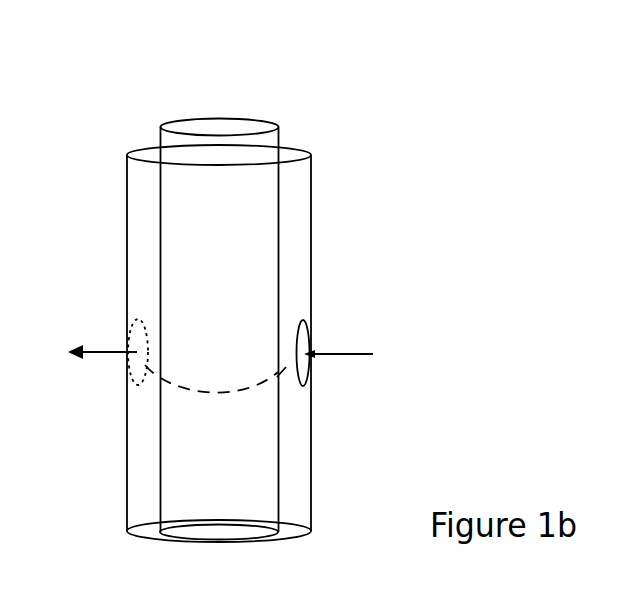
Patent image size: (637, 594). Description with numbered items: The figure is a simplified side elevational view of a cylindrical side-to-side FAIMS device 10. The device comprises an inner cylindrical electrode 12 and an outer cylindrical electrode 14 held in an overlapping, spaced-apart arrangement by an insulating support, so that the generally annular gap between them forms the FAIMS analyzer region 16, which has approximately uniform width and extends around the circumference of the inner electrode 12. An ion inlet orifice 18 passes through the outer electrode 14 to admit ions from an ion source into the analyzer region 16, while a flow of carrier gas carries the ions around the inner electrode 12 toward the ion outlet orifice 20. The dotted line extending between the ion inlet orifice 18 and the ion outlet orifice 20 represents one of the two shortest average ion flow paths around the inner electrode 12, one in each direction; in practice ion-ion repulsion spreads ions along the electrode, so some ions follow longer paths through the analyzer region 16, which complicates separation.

The cylindrical side-to-side FAIMS device 10 is at (86, 85).
The inner cylindrical electrode 12 is at (232, 117).
The outer cylindrical electrode 14 is at (307, 410).
The FAIMS analyzer region 16 is at (291, 153).
The ion inlet orifice 18 is at (305, 321).
The ion outlet orifice 20 is at (138, 383).